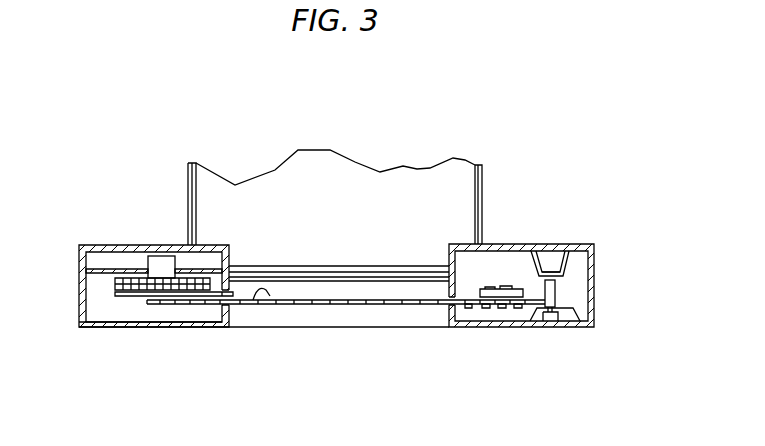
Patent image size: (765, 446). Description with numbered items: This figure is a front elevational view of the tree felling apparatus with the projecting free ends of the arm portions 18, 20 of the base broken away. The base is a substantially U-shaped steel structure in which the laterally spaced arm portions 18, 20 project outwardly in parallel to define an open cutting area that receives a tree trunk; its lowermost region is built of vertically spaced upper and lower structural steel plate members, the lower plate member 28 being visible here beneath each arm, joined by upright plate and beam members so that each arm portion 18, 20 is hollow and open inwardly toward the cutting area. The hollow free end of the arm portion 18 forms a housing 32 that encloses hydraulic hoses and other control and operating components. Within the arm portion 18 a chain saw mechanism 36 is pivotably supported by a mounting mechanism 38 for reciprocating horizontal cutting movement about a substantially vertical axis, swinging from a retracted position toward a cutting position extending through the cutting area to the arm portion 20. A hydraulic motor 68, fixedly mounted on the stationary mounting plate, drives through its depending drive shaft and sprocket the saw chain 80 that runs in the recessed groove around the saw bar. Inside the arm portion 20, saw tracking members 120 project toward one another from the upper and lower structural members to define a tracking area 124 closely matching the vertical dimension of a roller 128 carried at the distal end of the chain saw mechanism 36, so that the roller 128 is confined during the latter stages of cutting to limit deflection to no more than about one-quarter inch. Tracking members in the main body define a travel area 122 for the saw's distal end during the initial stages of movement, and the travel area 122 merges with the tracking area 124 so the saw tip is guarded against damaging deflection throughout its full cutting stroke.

The arm portion 18 is at (79, 292).
The arm portion 20 is at (597, 257).
The lower structural steel plate member 28 is at (165, 329).
The housing 32 is at (482, 195).
The chain saw mechanism 36 is at (322, 309).
The mounting mechanism 38 is at (132, 306).
The hydraulic motor 68 is at (161, 264).
The saw chain 80 is at (378, 305).
The saw tracking member 120 is at (557, 262).
The travel area 122 is at (253, 300).
The tracking area 124 is at (567, 276).
The roller 128 is at (553, 294).